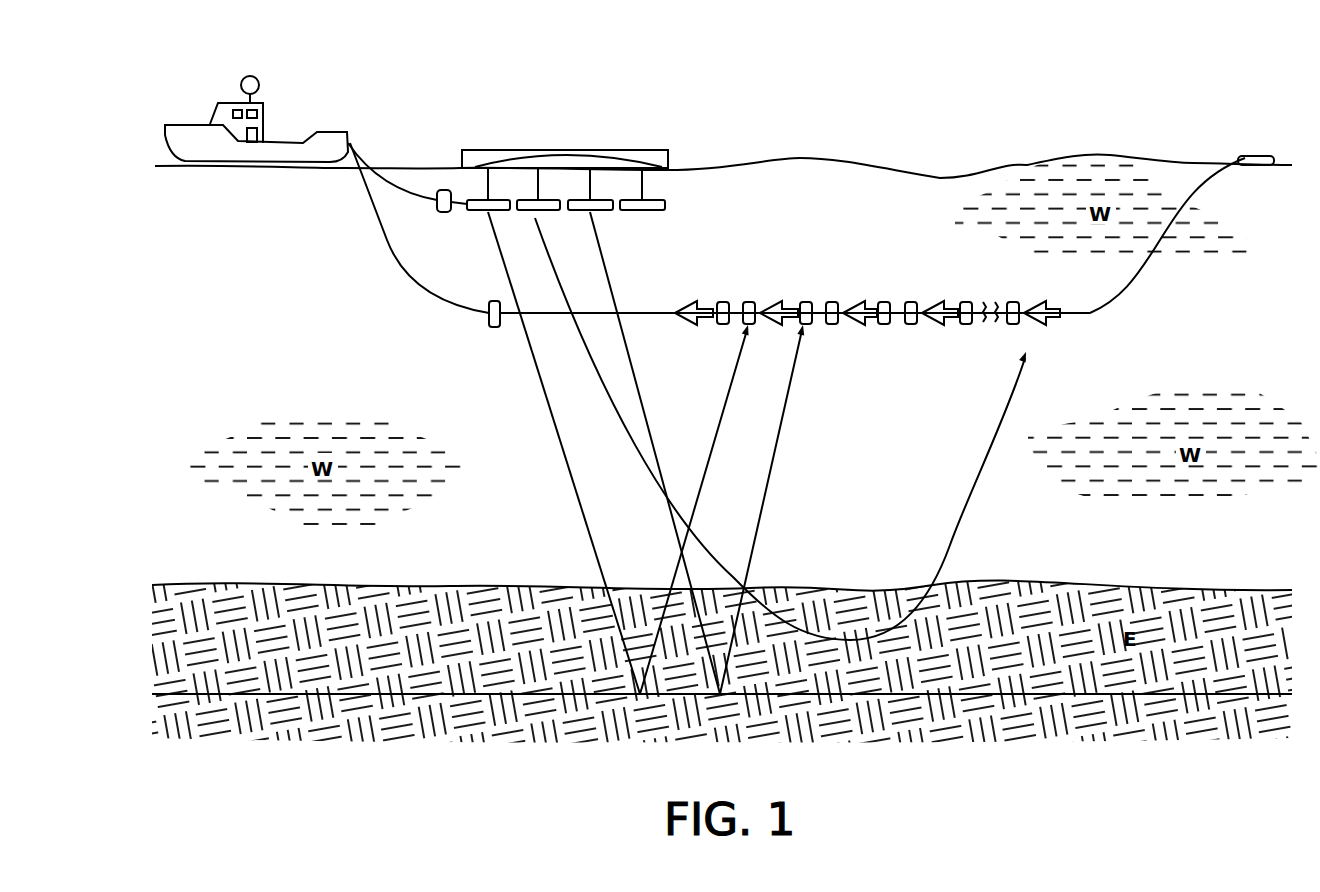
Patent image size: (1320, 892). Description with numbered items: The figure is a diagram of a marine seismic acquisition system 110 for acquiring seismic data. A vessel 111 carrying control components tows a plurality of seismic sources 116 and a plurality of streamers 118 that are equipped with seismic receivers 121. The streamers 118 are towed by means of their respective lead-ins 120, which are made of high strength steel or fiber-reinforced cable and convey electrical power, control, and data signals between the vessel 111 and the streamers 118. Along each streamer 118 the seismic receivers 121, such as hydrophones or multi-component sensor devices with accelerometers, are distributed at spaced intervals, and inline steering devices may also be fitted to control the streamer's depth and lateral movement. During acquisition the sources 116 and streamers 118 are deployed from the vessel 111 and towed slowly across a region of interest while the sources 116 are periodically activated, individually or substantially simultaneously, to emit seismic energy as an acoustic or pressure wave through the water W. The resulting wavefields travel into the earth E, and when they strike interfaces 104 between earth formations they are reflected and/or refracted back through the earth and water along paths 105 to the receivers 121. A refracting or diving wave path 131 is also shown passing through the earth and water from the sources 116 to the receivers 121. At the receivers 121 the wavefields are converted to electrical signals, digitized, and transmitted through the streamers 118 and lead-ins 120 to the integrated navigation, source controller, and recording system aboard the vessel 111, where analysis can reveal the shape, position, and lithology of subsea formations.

The marine seismic acquisition system 110 is at (979, 72).
The vessel 111 is at (190, 122).
The lead-in 120 is at (383, 239).
The seismic source 116 is at (602, 212).
The path 105 is at (713, 452).
The refracting or diving wave path 131 is at (950, 537).
The streamer 118 is at (893, 330).
The seismic receiver 121 is at (750, 303).
The interface 104 is at (1000, 590).